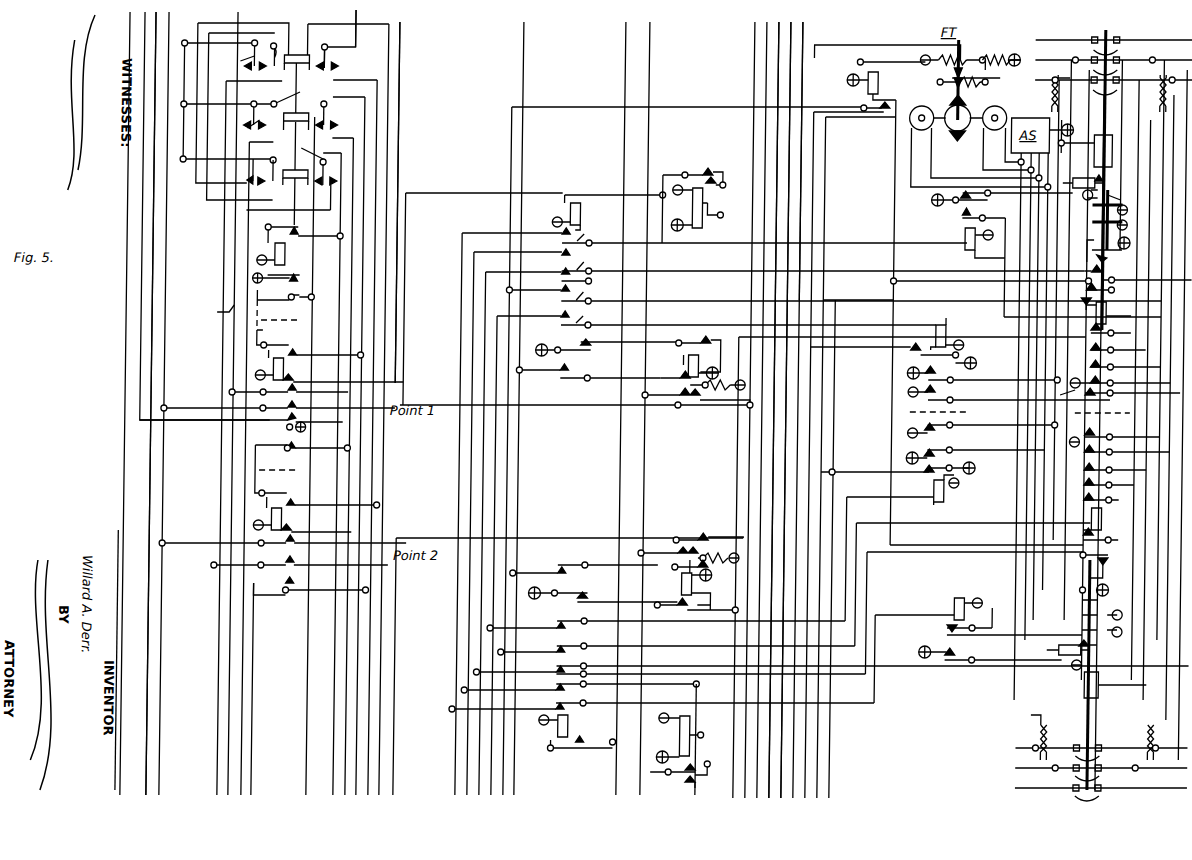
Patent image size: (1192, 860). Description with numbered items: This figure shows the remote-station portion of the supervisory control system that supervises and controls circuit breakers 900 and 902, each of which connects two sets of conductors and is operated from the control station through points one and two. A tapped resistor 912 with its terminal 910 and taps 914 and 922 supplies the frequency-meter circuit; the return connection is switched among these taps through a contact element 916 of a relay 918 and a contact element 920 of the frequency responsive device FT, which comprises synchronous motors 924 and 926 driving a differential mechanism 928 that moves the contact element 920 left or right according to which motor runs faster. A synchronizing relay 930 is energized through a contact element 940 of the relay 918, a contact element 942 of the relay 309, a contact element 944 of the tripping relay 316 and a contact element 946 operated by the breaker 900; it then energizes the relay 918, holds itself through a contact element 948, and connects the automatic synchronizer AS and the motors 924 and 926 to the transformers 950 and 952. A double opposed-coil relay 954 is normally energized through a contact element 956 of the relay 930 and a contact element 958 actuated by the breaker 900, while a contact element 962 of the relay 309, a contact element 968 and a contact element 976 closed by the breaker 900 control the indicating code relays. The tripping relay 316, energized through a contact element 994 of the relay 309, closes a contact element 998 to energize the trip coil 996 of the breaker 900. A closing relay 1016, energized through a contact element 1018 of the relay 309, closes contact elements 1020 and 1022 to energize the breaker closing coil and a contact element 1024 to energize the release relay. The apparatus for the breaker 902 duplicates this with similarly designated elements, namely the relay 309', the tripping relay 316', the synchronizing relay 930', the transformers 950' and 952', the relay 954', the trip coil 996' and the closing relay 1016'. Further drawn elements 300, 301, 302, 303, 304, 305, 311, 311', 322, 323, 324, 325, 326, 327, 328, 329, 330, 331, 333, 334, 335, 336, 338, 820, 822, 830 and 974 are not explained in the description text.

The relay 300 is at (296, 68).
The relay 301 is at (296, 125).
The relay 302 is at (280, 177).
The relay 303 is at (285, 254).
The relay 304 is at (329, 356).
The relay 305 is at (316, 501).
The relay 309 is at (608, 211).
The relay 309' is at (576, 733).
The relay 311 is at (698, 372).
The relay 311' is at (690, 573).
The tripping relay 316 is at (977, 249).
The relay 316' is at (954, 615).
The contact 322 is at (327, 58).
The contact 323 is at (327, 115).
The contact 324 is at (298, 159).
The contact 325 is at (285, 289).
The wire 326 is at (397, 37).
The contact 327 is at (304, 228).
The contact 328 is at (296, 264).
The contact 329 is at (259, 119).
The contact 330 is at (281, 315).
The contact 331 is at (234, 55).
The wire 333 is at (207, 304).
The contact 334 is at (290, 92).
The contact 335 is at (262, 47).
The contact 336 is at (288, 198).
The wire 338 is at (152, 657).
The wire 820 is at (804, 30).
The wire 822 is at (784, 57).
The wire 830 is at (772, 80).
The circuit breaker 900 is at (1112, 180).
The circuit breaker 902 is at (1112, 675).
The terminal 910 is at (965, 58).
The tapped resistor 912 is at (1001, 54).
The tap 914 is at (919, 54).
The contact element 916 is at (887, 54).
The relay 918 is at (878, 82).
The contact element 920 is at (969, 80).
The tap 922 is at (995, 65).
The synchronous motor 924 is at (930, 98).
The synchronous motor 926 is at (1002, 106).
The differential mechanism 928 is at (956, 124).
The synchronizing relay 930 is at (1128, 340).
The relay 930' is at (1088, 549).
The contact element 940 is at (870, 103).
The contact element 942 is at (833, 292).
The contact element 944 is at (961, 262).
The contact element 946 is at (1122, 191).
The contact element 948 is at (1087, 294).
The transformer 950 is at (1044, 93).
The coil 950' is at (1020, 737).
The transformer 952 is at (1143, 93).
The coil 952' is at (1126, 742).
The double opposed-coil relay 954 is at (694, 205).
The relay 954' is at (680, 750).
The contact element 956 is at (1041, 272).
The contact element 958 is at (1099, 220).
The contact element 962 is at (779, 260).
The contact element 968 is at (562, 281).
The contact 974 is at (1120, 387).
The contact element 976 is at (1107, 255).
The contact element 994 is at (714, 232).
The trip coil 996 is at (1083, 178).
The contact 996' is at (1048, 654).
The contact element 998 is at (1001, 199).
The closing relay 1016 is at (885, 334).
The relay 1016' is at (931, 499).
The contact element 1018 is at (716, 315).
The contact element 1020 is at (948, 378).
The contact element 1022 is at (948, 398).
The contact element 1024 is at (965, 350).